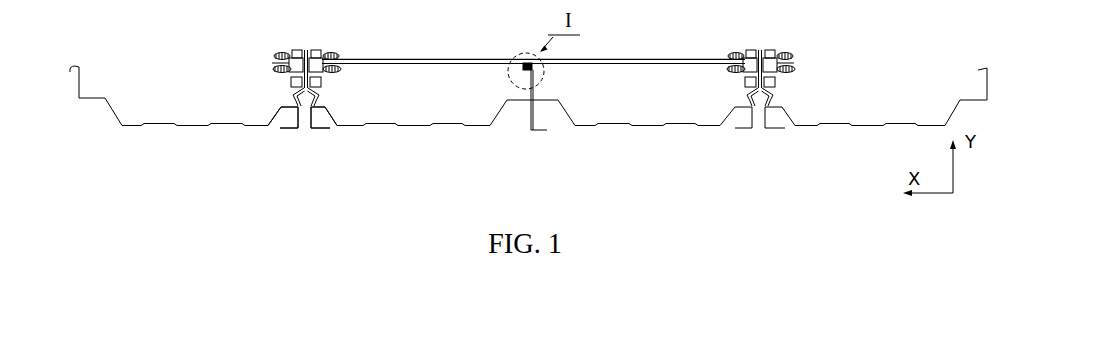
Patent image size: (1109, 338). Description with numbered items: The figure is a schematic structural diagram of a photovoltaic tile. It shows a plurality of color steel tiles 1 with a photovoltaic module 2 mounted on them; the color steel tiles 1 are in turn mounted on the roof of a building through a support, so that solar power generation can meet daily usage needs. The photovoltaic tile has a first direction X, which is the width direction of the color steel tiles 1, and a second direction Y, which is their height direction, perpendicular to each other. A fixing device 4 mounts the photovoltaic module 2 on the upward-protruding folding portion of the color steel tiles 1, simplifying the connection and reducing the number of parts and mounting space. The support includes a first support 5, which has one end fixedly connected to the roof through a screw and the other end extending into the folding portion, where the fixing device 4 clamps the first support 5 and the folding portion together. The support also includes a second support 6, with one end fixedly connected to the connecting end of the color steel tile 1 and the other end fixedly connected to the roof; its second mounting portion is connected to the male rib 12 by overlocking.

The color steel tile 1 is at (84, 79).
The photovoltaic module 2 is at (388, 58).
The fixing device 4 is at (330, 57).
The first support 5 is at (325, 130).
The second support 6 is at (546, 131).
The male rib 12 is at (520, 69).